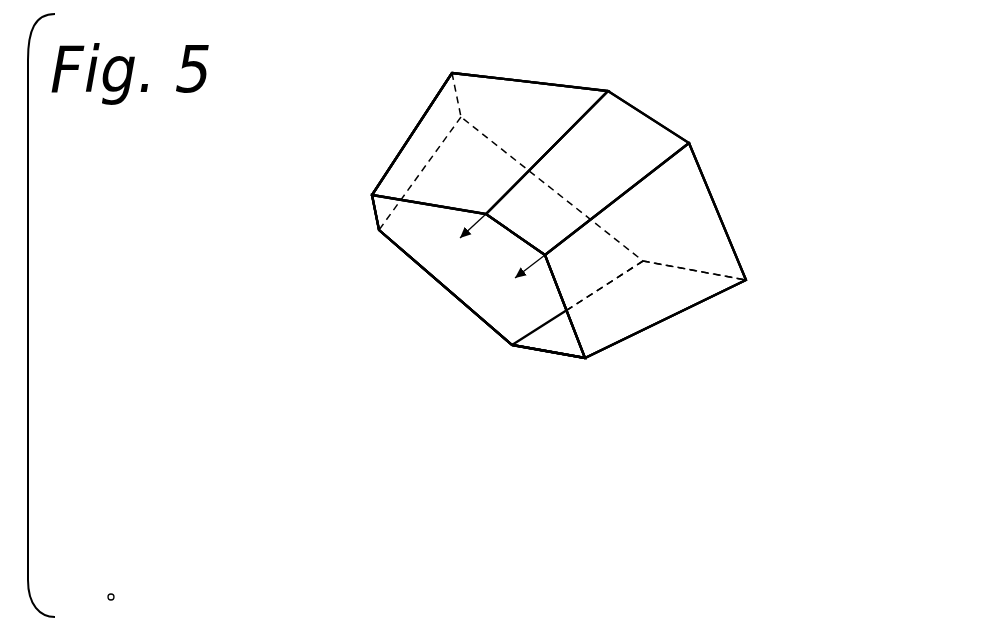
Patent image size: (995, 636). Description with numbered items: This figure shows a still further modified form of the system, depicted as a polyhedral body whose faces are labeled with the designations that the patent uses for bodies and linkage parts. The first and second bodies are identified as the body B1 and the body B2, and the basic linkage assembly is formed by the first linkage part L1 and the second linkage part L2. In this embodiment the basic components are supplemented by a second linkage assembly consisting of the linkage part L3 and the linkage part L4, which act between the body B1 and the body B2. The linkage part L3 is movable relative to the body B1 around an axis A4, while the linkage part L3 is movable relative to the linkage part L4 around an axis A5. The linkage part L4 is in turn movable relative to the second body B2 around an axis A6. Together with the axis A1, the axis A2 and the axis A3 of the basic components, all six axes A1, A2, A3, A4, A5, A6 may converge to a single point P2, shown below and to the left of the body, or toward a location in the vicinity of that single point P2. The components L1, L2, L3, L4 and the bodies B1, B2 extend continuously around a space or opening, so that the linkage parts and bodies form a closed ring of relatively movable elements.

The single point P2 is at (114, 596).
The first linkage part L1 is at (645, 250).
The second linkage part L2 is at (587, 173).
The linkage part L3 is at (478, 276).
The linkage part L4 is at (385, 203).
The first body B1 is at (629, 309).
The second body B2 is at (490, 143).
The axis A1 is at (585, 358).
The axis A2 is at (717, 201).
The axis A3 is at (545, 77).
The axis A4 is at (512, 345).
The axis A5 is at (379, 230).
The axis A6 is at (372, 195).